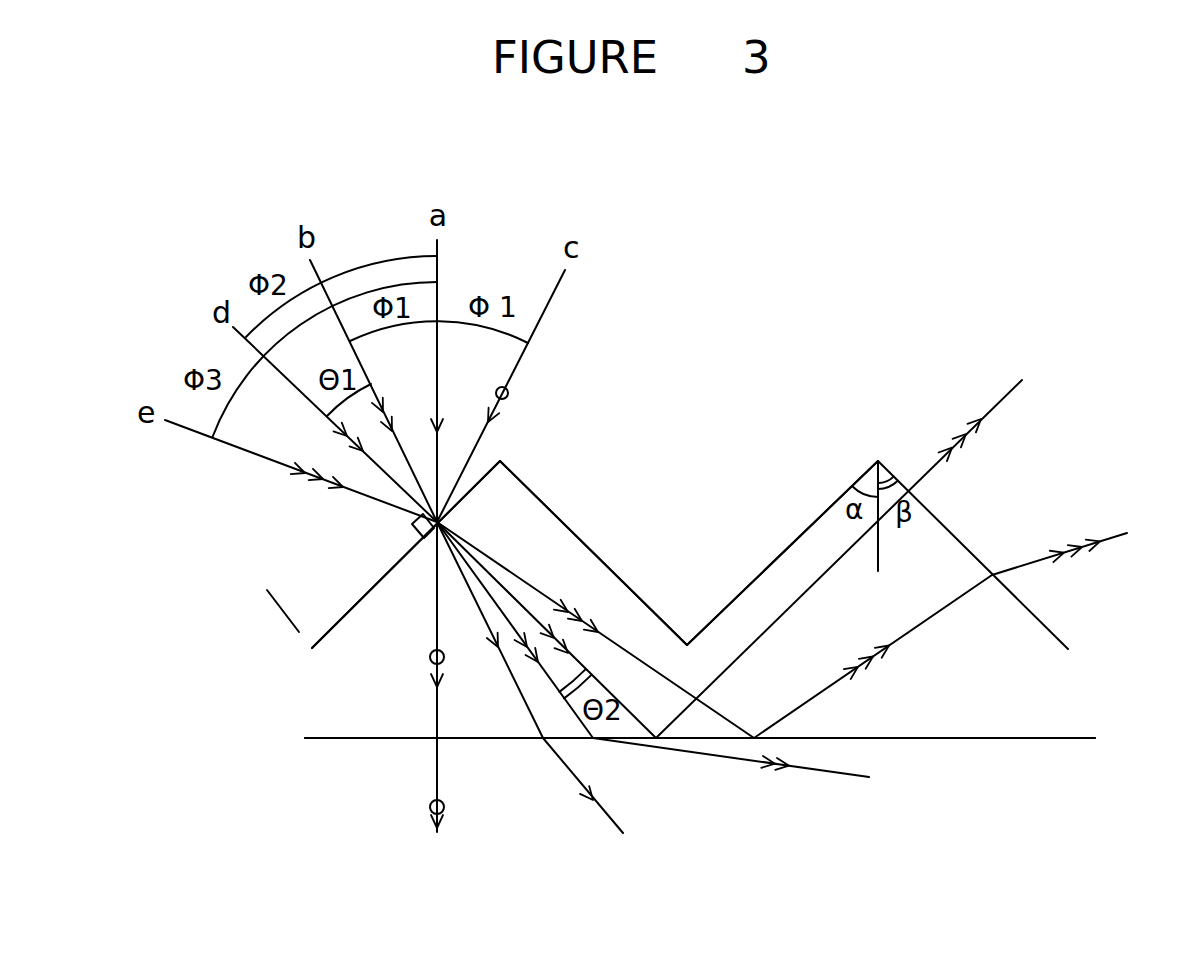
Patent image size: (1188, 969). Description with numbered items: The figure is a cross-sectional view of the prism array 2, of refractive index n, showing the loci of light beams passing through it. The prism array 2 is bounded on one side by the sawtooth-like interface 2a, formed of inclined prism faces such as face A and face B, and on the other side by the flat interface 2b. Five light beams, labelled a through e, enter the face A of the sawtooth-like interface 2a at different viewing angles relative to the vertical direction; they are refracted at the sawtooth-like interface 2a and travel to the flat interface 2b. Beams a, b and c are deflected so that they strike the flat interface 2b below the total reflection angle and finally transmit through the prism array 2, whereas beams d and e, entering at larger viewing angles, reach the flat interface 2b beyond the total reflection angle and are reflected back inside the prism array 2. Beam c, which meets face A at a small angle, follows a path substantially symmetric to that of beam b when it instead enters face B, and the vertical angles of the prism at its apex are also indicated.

The prism array 2 is at (702, 507).
The sawtooth-like interface 2a is at (800, 530).
The flat interface 2b is at (986, 740).
The face A of the sawtooth-like interface A is at (483, 466).
The face B of the sawtooth-like interface B is at (621, 566).